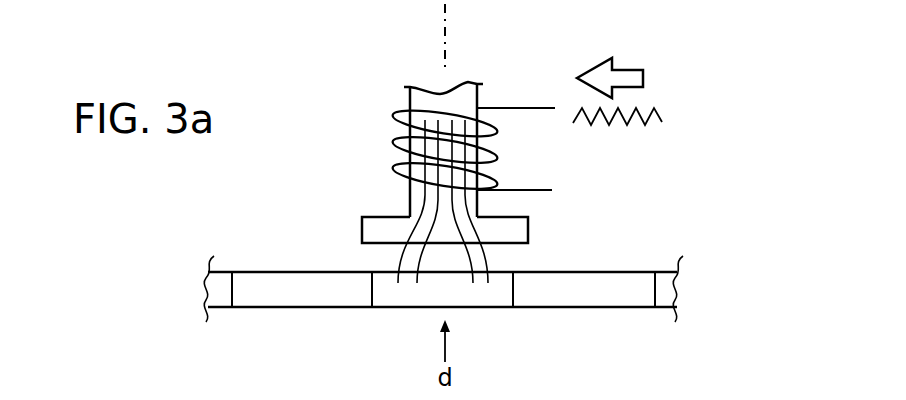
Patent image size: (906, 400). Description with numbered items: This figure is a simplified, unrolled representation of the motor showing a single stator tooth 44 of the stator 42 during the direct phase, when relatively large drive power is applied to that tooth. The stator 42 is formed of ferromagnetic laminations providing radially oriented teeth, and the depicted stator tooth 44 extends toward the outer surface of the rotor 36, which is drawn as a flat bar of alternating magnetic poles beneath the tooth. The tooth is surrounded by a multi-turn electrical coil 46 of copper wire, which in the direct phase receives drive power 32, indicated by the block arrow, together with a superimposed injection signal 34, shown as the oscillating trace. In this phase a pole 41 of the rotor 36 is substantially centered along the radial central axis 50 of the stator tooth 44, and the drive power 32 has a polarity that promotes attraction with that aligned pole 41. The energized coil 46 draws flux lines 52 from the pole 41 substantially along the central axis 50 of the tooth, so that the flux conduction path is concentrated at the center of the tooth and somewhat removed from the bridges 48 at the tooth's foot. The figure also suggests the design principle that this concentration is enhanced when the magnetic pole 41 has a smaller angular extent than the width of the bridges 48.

The drive power 32 is at (620, 66).
The injection signal 34 is at (626, 118).
The rotor 36 is at (268, 242).
The pole 41 is at (410, 297).
The stator 42 is at (312, 150).
The stator tooth 44 is at (440, 97).
The coil 46 is at (392, 118).
The bridges 48 is at (378, 215).
The central axis 50 is at (445, 36).
The flux lines 52 is at (400, 257).